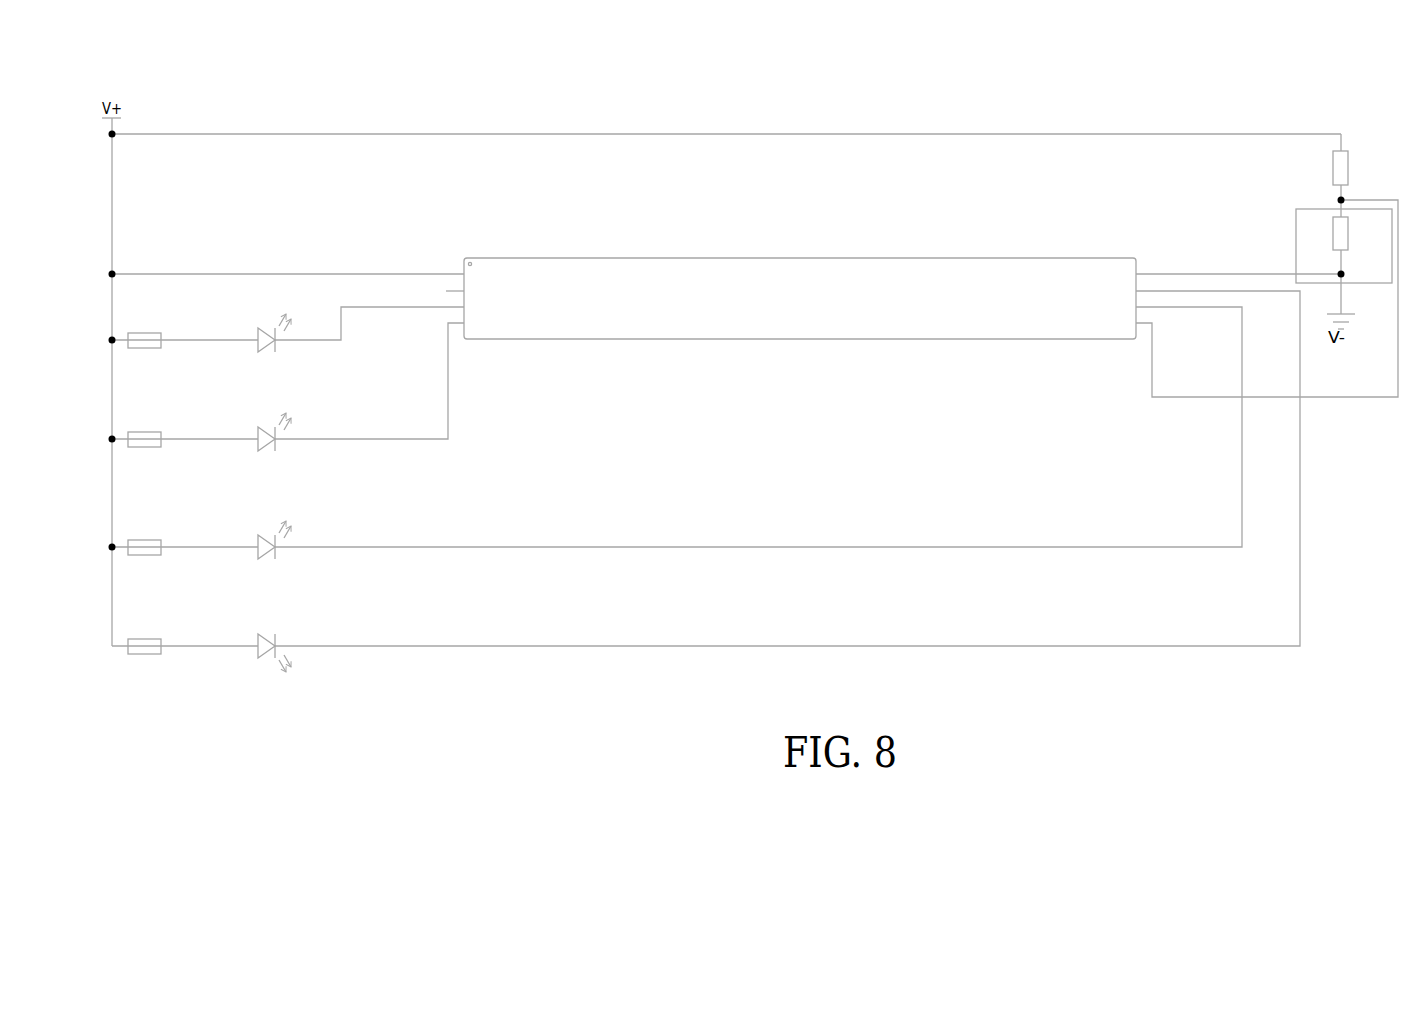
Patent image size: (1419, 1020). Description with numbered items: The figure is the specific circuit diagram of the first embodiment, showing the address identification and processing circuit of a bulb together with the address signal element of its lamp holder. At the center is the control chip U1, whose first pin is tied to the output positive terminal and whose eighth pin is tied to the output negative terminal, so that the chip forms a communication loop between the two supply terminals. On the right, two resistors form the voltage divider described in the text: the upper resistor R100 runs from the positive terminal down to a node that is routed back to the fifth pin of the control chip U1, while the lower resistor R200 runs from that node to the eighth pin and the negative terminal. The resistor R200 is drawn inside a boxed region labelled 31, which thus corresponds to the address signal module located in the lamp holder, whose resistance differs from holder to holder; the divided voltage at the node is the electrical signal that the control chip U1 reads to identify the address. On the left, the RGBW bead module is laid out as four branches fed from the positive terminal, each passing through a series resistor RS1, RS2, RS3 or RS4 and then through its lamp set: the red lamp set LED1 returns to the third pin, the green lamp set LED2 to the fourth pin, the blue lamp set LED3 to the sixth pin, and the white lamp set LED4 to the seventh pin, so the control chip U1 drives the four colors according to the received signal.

The voltage divider sampling circuit (R200 block) 31 is at (1229, 228).
The control chip U1 is at (801, 281).
The resistor 10K R100 is at (1364, 171).
The resistor 1k R200 is at (1364, 238).
The series resistor 150 for LED1 RS1 is at (148, 323).
The series resistor 56 for LED2 RS2 is at (148, 422).
The series resistor 56 for LED3 RS3 is at (148, 530).
The series resistor 56 for LED4 RS4 is at (148, 629).
The red lamp set LED1 is at (270, 315).
The green lamp set LED2 is at (270, 414).
The blue lamp set LED3 is at (270, 522).
The white lamp set LED4 is at (270, 636).